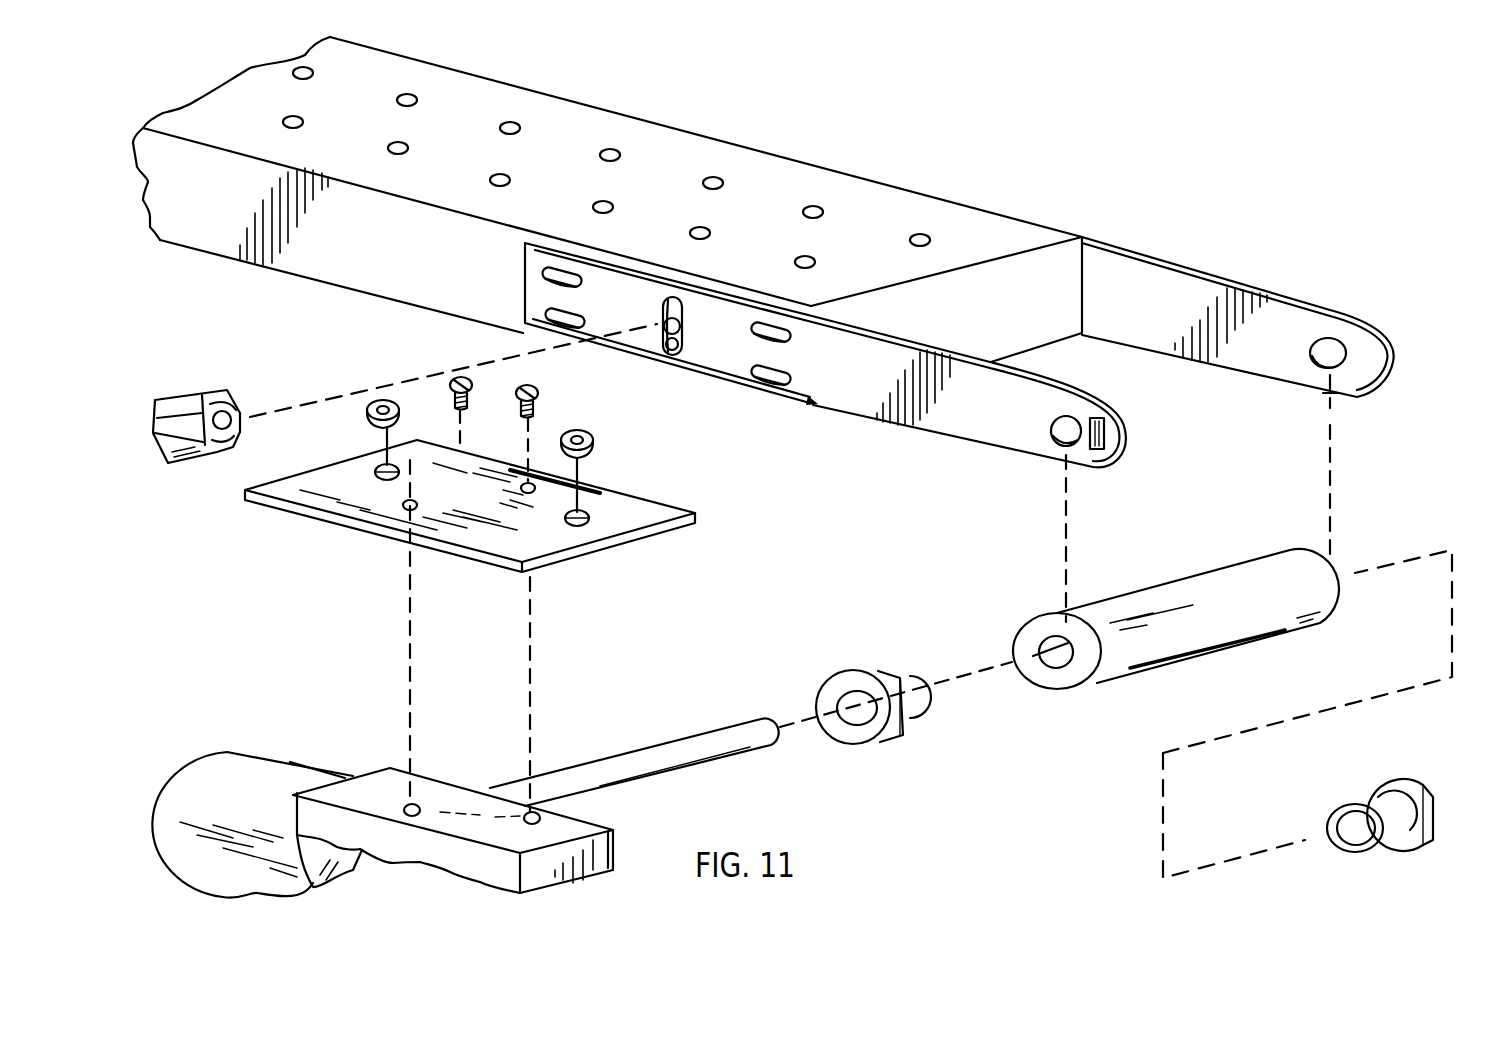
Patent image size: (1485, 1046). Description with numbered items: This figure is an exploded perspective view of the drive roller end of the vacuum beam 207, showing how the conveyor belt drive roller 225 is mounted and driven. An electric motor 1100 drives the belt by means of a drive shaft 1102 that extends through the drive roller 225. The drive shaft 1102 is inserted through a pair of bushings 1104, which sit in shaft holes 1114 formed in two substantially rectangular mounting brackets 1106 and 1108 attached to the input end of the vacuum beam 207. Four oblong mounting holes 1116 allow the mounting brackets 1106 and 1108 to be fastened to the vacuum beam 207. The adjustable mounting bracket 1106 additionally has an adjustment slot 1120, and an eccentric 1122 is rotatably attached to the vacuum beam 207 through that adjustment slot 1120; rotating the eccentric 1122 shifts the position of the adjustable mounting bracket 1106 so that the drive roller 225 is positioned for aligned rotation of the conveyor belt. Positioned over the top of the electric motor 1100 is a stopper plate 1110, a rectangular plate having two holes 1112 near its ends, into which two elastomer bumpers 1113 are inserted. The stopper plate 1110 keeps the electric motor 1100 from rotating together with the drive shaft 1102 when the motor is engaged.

The vacuum beam 207 is at (858, 146).
The oblong mounting holes 1116 is at (525, 312).
The adjustment slot 1120 is at (660, 326).
The adjustable mounting bracket 1106 is at (990, 430).
The mounting bracket 1108 is at (1293, 318).
The shaft hole 1114 is at (1070, 440).
The eccentric 1122 is at (193, 403).
The stopper plate 1110 is at (317, 492).
The elastomer bumpers 1113 is at (368, 414).
The holes 1112 is at (380, 468).
The electric motor 1100 is at (252, 780).
The drive shaft 1102 is at (553, 783).
The bushings 1104 is at (853, 690).
The drive roller 225 is at (1224, 617).